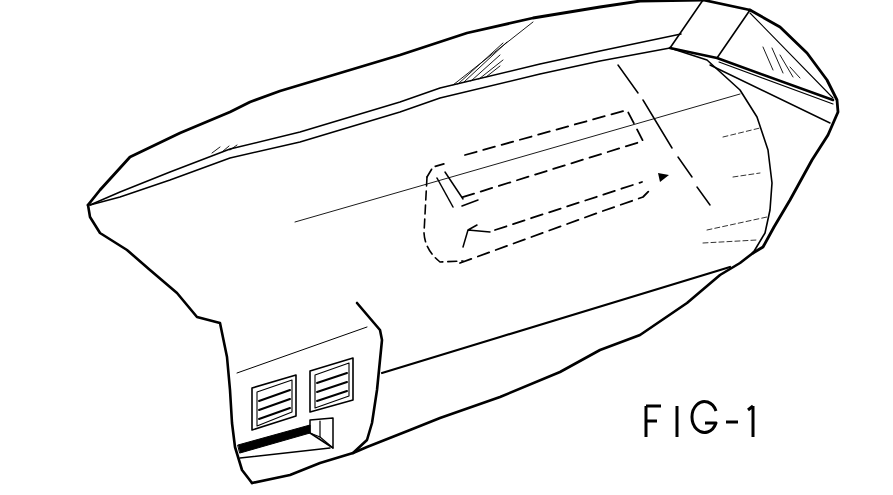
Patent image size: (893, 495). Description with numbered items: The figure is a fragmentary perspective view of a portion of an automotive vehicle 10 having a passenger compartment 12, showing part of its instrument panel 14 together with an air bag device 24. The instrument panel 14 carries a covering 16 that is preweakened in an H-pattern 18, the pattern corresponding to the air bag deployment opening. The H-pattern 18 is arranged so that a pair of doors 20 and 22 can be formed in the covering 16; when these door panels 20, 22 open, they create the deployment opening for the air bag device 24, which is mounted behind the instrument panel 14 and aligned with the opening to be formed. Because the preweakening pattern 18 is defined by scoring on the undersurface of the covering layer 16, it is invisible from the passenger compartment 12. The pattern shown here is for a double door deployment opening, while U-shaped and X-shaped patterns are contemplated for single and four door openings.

The automotive vehicle 10 is at (244, 95).
The passenger compartment 12 is at (464, 393).
The instrument panel 14 is at (159, 208).
The covering 16 is at (275, 206).
The H-pattern 18 is at (704, 182).
The door 20 is at (397, 119).
The door 22 is at (526, 210).
The air bag device 24 is at (364, 222).